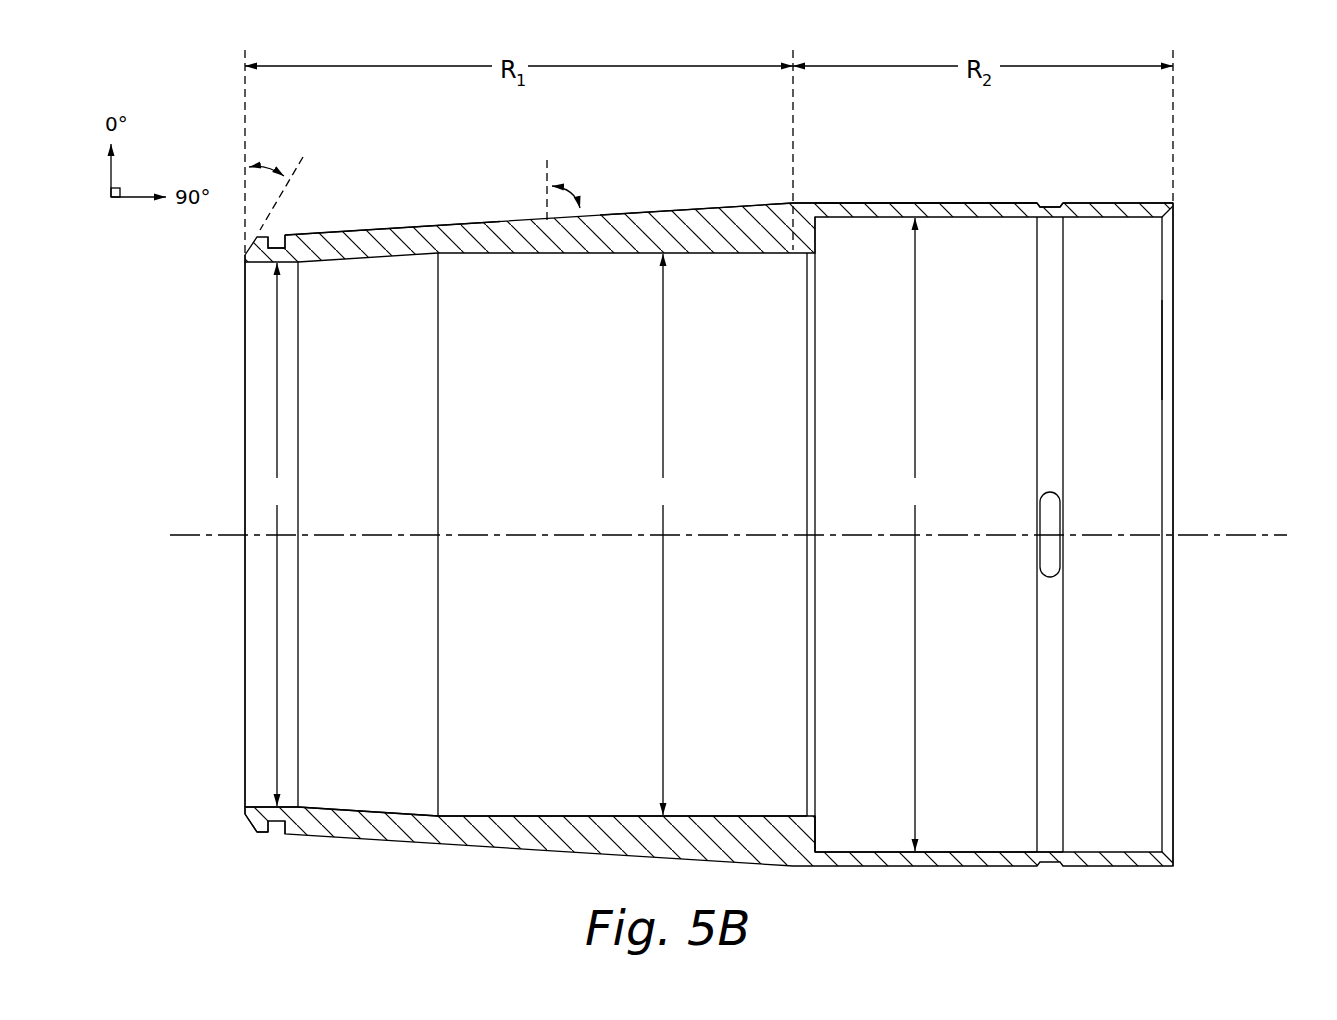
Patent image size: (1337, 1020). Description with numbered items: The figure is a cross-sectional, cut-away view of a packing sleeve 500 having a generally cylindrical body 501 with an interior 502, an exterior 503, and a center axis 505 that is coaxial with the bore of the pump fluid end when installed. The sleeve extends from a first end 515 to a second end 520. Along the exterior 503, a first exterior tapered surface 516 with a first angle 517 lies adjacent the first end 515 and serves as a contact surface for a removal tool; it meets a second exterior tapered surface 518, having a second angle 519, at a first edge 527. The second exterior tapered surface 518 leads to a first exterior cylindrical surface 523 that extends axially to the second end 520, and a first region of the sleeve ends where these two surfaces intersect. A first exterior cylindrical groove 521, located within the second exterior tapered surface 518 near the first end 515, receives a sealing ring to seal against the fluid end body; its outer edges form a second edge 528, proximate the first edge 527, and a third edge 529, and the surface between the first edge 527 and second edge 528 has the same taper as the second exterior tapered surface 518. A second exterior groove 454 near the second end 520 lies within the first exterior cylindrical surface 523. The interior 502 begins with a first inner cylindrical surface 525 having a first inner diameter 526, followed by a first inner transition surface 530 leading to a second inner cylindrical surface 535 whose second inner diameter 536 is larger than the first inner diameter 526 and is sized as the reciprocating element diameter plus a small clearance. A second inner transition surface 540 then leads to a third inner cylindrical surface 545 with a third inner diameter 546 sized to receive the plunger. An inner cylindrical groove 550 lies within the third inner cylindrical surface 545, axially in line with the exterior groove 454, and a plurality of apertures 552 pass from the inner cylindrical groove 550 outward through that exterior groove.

The packing sleeve 500 is at (1240, 115).
The body 501 is at (1210, 198).
The interior 502 is at (1195, 345).
The exterior 503 is at (686, 183).
The center axis 505 is at (1242, 528).
The first end 515 is at (243, 308).
The first exterior tapered surface 516 is at (241, 824).
The first angle 517 is at (268, 166).
The second exterior tapered surface 518 is at (430, 220).
The second angle 519 is at (572, 188).
The second end 520 is at (1180, 274).
The first exterior cylindrical groove 521 is at (280, 242).
The first exterior cylindrical surface 523 is at (888, 198).
The retention groove 454 is at (1048, 200).
The first inner cylindrical surface 525 is at (258, 803).
The first inner diameter 526 is at (281, 534).
The first edge 527 is at (251, 840).
The second edge 528 is at (267, 838).
The third edge 529 is at (287, 838).
The first inner transition surface 530 is at (380, 810).
The second inner cylindrical surface 535 is at (580, 811).
The second inner diameter 536 is at (668, 534).
The second inner transition surface 540 is at (817, 833).
The third inner cylindrical surface 545 is at (977, 847).
The third inner diameter 546 is at (921, 534).
The inner cylindrical groove 550 is at (1050, 848).
The apertures 552 is at (1045, 518).